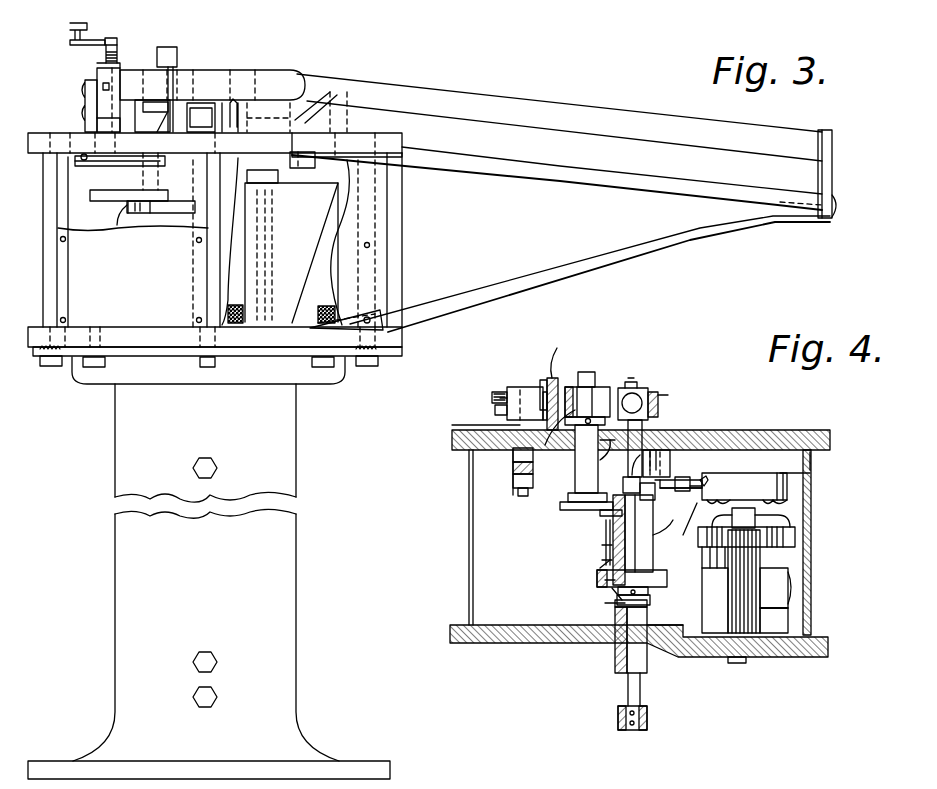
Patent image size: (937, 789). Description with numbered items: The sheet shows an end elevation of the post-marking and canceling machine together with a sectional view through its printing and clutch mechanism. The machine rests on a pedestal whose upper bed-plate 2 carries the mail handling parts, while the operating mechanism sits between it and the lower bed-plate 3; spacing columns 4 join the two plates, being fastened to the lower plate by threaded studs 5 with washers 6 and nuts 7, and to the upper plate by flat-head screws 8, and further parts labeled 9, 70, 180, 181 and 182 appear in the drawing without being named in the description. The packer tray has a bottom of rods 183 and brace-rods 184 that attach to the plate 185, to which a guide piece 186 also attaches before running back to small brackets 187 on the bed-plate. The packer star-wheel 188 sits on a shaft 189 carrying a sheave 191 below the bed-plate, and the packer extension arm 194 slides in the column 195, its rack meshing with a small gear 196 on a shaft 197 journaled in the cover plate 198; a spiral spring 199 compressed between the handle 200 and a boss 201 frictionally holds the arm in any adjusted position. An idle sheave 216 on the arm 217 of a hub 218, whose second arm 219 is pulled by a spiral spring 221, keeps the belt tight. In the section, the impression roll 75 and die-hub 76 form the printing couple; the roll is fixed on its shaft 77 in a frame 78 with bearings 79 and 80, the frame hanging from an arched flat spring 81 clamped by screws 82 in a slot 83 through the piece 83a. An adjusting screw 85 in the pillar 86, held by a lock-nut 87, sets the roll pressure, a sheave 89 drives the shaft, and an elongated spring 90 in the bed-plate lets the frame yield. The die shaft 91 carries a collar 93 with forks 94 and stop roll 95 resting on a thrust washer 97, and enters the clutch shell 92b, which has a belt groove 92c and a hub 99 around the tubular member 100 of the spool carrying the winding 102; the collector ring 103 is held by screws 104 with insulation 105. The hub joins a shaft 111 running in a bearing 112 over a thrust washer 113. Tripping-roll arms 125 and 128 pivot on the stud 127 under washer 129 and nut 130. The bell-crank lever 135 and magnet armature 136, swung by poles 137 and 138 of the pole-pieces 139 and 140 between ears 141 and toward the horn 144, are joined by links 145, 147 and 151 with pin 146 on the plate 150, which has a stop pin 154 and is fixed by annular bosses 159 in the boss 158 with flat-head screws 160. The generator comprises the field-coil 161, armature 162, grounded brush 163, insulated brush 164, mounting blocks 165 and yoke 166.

In FIG. 4, the upper bed-plate 2 is at (795, 440).
In FIG. 3, the lower bed-plate 3 is at (28, 335).
In FIG. 4, the lower bed-plate 3 is at (452, 630).
In FIG. 3, the spacing columns 4 is at (68, 204).
In FIG. 3, the threaded studs 5 is at (70, 364).
In FIG. 3, the washers 6 is at (33, 351).
In FIG. 3, the nuts 7 is at (40, 360).
In FIG. 3, the flat-head screws 8 is at (28, 148).
In FIG. 3, the pedestal 9 is at (195, 581).
In FIG. 4, the shaft 70 is at (610, 449).
In FIG. 4, the impression roll 75 is at (600, 392).
In FIG. 4, the die-hub 76 is at (634, 382).
In FIG. 4, the shaft 77 is at (600, 387).
In FIG. 4, the frame 78 is at (571, 451).
In FIG. 4, the bearing 79 is at (590, 372).
In FIG. 4, the bearing 80 is at (585, 460).
In FIG. 4, the arched flat spring 81 is at (544, 380).
In FIG. 4, the screws 82 is at (538, 378).
In FIG. 4, the slot 83 is at (556, 380).
In FIG. 4, the piece 83a is at (555, 360).
In FIG. 4, the adjusting screw 85 is at (535, 376).
In FIG. 4, the pillar 86 is at (512, 383).
In FIG. 4, the lock-nut 87 is at (492, 397).
In FIG. 4, the sheave 89 is at (613, 512).
In FIG. 4, the elongated spring 90 is at (470, 422).
In FIG. 4, the shaft 91 is at (645, 400).
In FIG. 4, the clutch shell 92b is at (653, 535).
In FIG. 4, the groove 92c is at (598, 566).
In FIG. 4, the collar 93 is at (620, 457).
In FIG. 4, the forks 94 is at (605, 516).
In FIG. 4, the stop roll 95 is at (660, 525).
In FIG. 4, the thrust washer 97 is at (604, 531).
In FIG. 4, the hub 99 is at (597, 575).
In FIG. 4, the tubular member 100 is at (610, 552).
In FIG. 4, the electrical winding 102 is at (612, 540).
In FIG. 4, the collector ring 103 is at (605, 580).
In FIG. 4, the screws 104 is at (615, 598).
In FIG. 4, the insulation 105 is at (617, 588).
In FIG. 4, the shaft 111 is at (630, 688).
In FIG. 4, the bearing 112 is at (618, 650).
In FIG. 4, the thrust washer 113 is at (678, 650).
In FIG. 4, the arm 125 is at (540, 496).
In FIG. 4, the stud 127 is at (513, 468).
In FIG. 4, the arm 128 is at (513, 455).
In FIG. 4, the washer 129 is at (513, 485).
In FIG. 4, the nut 130 is at (518, 495).
In FIG. 4, the bell-crank lever 135 is at (678, 494).
In FIG. 4, the magnet armature 136 is at (767, 471).
In FIG. 4, the magnetic pole 137 is at (680, 545).
In FIG. 4, the magnetic pole 138 is at (790, 505).
In FIG. 4, the pole-piece 139 is at (720, 575).
In FIG. 4, the pole-piece 140 is at (775, 583).
In FIG. 4, the ears 141 is at (716, 480).
In FIG. 4, the horn 144 is at (790, 480).
In FIG. 4, the link 145 is at (706, 498).
In FIG. 4, the pin 146 is at (712, 470).
In FIG. 4, the link 147 is at (706, 476).
In FIG. 4, the plate 150 is at (678, 478).
In FIG. 4, the link 151 is at (690, 476).
In FIG. 4, the stop pin 154 is at (663, 463).
In FIG. 4, the boss 158 is at (658, 450).
In FIG. 4, the annular bosses 159 is at (660, 400).
In FIG. 4, the flat-head screws 160 is at (673, 397).
In FIG. 4, the field-coil 161 is at (775, 625).
In FIG. 4, the armature 162 is at (795, 550).
In FIG. 4, the grounded brush 163 is at (683, 560).
In FIG. 4, the insulated brush 164 is at (785, 540).
In FIG. 4, the blocks 165 is at (778, 617).
In FIG. 4, the yoke 166 is at (780, 525).
In FIG. 3, the pivot block 180 is at (190, 75).
In FIG. 3, the housing 181 is at (315, 226).
In FIG. 3, the brace 182 is at (330, 92).
In FIG. 3, the rods 183 is at (580, 180).
In FIG. 3, the brace-rods 184 is at (640, 240).
In FIG. 3, the plate 185 is at (822, 175).
In FIG. 3, the guide piece 186 is at (632, 120).
In FIG. 3, the brackets 187 is at (335, 128).
In FIG. 3, the packer star-wheel 188 is at (215, 85).
In FIG. 3, the shaft 189 is at (175, 48).
In FIG. 3, the sheave 191 is at (177, 212).
In FIG. 3, the packer extension arm 194 is at (140, 70).
In FIG. 3, the column 195 is at (128, 115).
In FIG. 3, the small gear 196 is at (88, 95).
In FIG. 3, the shaft 197 is at (106, 58).
In FIG. 3, the cover plate 198 is at (120, 70).
In FIG. 3, the spiral spring 199 is at (100, 48).
In FIG. 3, the handle 200 is at (84, 40).
In FIG. 3, the boss 201 is at (118, 42).
In FIG. 3, the idle sheave 216 is at (126, 203).
In FIG. 3, the arm 217 is at (123, 214).
In FIG. 3, the hub 218 is at (145, 170).
In FIG. 3, the arm 219 is at (90, 165).
In FIG. 3, the spiral spring 221 is at (80, 158).